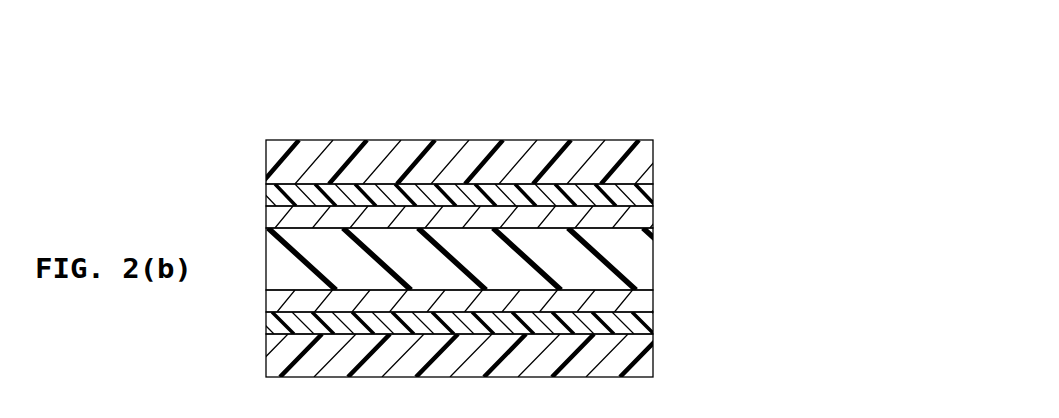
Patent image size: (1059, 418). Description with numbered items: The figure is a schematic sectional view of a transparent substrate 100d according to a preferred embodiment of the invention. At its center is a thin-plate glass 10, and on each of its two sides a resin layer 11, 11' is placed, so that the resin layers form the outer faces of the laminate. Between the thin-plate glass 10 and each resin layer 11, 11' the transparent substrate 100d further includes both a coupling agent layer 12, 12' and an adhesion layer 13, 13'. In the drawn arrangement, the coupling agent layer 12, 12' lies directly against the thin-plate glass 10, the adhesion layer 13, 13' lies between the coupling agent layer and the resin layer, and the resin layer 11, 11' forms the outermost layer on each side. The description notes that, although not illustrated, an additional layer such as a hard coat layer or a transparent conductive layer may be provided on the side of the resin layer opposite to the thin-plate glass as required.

The transparent substrate 100d is at (662, 92).
The resin layer 11' is at (488, 158).
The adhesion layer 13' is at (502, 187).
The coupling agent layer 12' is at (508, 214).
The thin-plate glass 10 is at (650, 247).
The coupling agent layer 12 is at (507, 306).
The adhesion layer 13 is at (500, 334).
The resin layer 11 is at (497, 362).